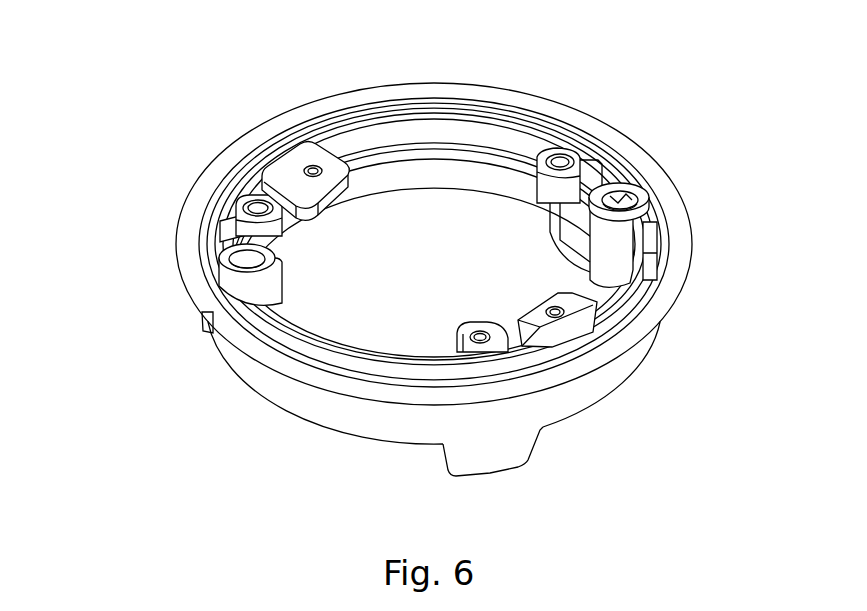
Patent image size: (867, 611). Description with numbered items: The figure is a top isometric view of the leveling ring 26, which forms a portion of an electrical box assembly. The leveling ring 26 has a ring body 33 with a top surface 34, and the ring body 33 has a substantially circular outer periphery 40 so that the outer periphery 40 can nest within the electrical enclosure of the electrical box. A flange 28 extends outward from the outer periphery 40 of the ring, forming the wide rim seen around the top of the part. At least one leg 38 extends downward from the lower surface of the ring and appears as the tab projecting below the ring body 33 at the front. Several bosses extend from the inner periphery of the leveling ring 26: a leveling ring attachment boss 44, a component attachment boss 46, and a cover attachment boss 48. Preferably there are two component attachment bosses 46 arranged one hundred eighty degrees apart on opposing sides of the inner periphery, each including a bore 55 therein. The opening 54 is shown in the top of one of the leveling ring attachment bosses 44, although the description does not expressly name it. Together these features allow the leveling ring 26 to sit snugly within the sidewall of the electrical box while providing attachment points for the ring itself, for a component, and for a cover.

The leveling ring 26 is at (88, 158).
The flange 28 is at (680, 237).
The ring body 33 is at (323, 381).
The top surface 34 is at (513, 113).
The leg 38 is at (492, 474).
The outer periphery 40 is at (583, 393).
The leveling ring attachment boss 44 is at (279, 290).
The component attachment boss 46 is at (320, 197).
The cover attachment boss 48 is at (478, 323).
The opening 54 is at (633, 204).
The bore 55 is at (314, 166).